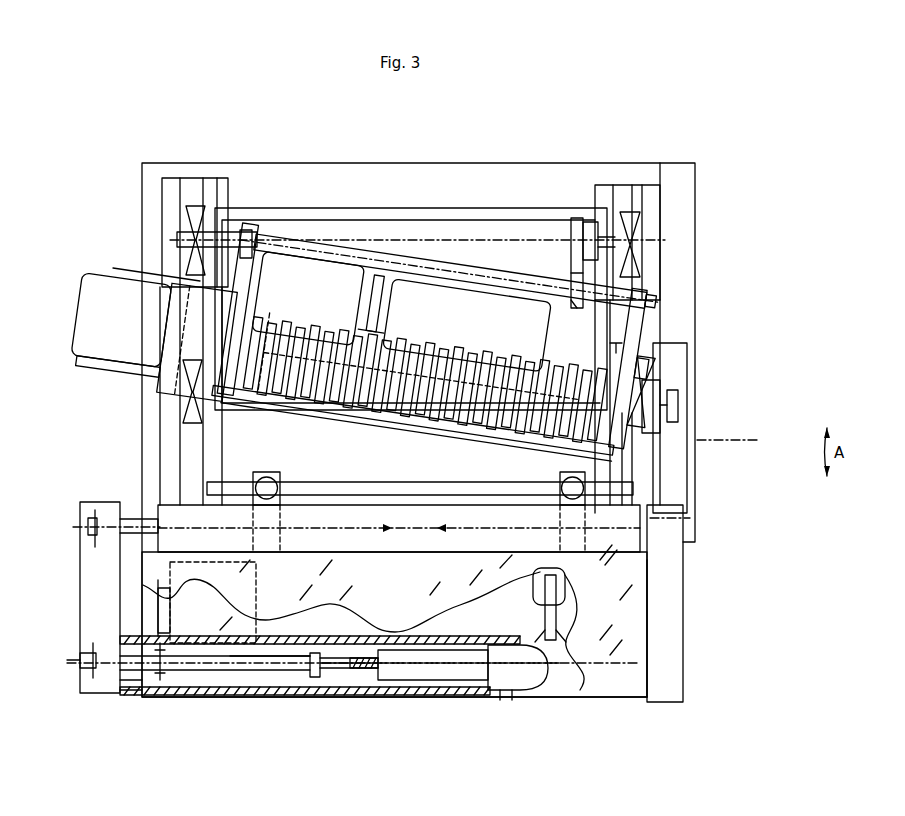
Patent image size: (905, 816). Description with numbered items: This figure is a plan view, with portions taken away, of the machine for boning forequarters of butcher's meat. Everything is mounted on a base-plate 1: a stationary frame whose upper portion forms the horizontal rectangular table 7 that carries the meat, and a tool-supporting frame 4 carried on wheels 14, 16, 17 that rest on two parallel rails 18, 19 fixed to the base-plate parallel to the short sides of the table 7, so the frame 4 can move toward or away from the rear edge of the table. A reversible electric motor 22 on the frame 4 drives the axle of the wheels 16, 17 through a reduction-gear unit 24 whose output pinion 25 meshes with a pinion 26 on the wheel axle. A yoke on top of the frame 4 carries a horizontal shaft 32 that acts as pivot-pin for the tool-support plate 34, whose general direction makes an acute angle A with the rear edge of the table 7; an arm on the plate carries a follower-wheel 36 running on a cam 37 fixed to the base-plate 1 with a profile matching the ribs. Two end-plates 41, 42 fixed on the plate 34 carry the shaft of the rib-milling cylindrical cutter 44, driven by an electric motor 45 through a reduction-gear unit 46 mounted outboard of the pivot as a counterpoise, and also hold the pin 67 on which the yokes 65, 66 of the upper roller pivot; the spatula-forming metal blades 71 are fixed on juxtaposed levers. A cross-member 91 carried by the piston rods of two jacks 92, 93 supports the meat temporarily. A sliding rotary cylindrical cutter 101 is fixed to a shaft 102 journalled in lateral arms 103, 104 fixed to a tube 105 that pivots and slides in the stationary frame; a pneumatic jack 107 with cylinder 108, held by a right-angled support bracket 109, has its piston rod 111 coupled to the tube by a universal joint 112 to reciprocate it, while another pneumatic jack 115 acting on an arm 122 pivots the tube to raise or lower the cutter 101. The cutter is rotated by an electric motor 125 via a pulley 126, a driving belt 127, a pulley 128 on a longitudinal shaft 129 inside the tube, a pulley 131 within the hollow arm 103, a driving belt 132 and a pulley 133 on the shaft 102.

The base-plate 1 is at (720, 144).
The tool-supporting frame 4 is at (305, 212).
The table 7 is at (297, 605).
The wheel 14 is at (188, 407).
The wheel 16 is at (188, 223).
The wheel 17 is at (715, 244).
The rail 18 is at (172, 467).
The rail 19 is at (700, 182).
The reversible electric motor 22 is at (440, 257).
The reduction-gear unit 24 is at (520, 263).
The pinion 25 is at (577, 305).
The pinion 26 is at (577, 227).
The horizontal shaft 32 is at (282, 385).
The tool-support plate 34 is at (113, 272).
The follower-wheel 36 is at (682, 375).
The cam 37 is at (690, 343).
The end-plate 41 is at (242, 270).
The end-plate 42 is at (652, 322).
The rib-milling cylindrical cutter 44 is at (700, 481).
The electric motor 45 is at (128, 347).
The reduction-gear unit 46 is at (175, 382).
The yoke 65 is at (258, 273).
The yoke 66 is at (655, 300).
The pin 67 is at (660, 282).
The metal blades 71 is at (390, 387).
The cross-member 91 is at (413, 486).
The jack 92 is at (259, 474).
The jack 93 is at (545, 470).
The sliding rotary cylindrical cutter 101 is at (178, 537).
The shaft 102 is at (134, 524).
The lateral arm 103 is at (90, 603).
The lateral arm 104 is at (668, 573).
The tube 105 is at (128, 678).
The pneumatic jack 107 is at (387, 682).
The cylinder 108 is at (423, 672).
The right-angled support bracket 109 is at (503, 680).
The piston rod 111 is at (350, 663).
The universal joint 112 is at (315, 662).
The pneumatic jack 115 is at (675, 595).
The arm 122 is at (682, 647).
The electric motor 125 is at (219, 597).
The pulley 126 is at (158, 595).
The driving belt 127 is at (160, 628).
The pulley 128 is at (160, 670).
The longitudinal shaft 129 is at (255, 665).
The pulley 131 is at (92, 672).
The driving belt 132 is at (100, 628).
The pulley 133 is at (88, 524).